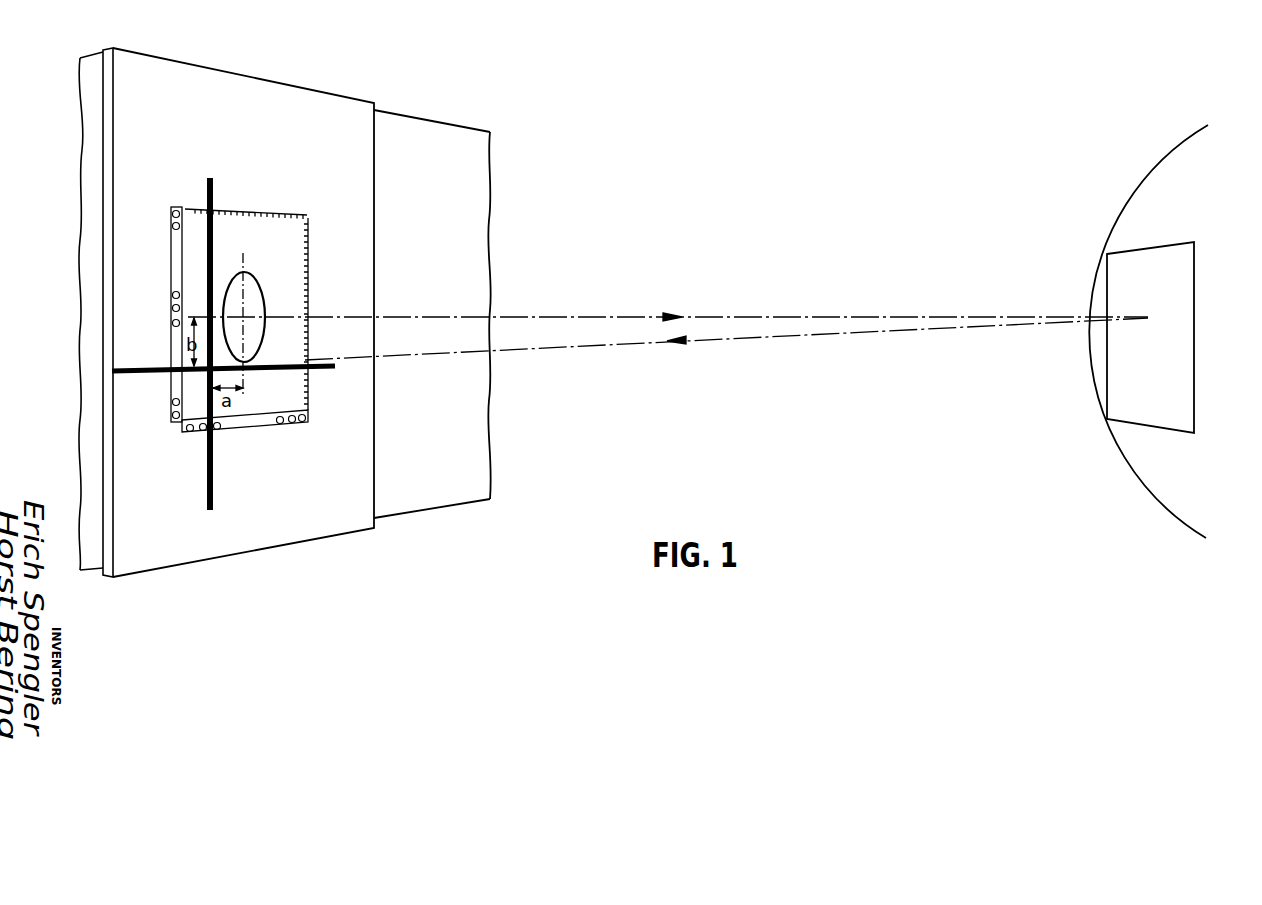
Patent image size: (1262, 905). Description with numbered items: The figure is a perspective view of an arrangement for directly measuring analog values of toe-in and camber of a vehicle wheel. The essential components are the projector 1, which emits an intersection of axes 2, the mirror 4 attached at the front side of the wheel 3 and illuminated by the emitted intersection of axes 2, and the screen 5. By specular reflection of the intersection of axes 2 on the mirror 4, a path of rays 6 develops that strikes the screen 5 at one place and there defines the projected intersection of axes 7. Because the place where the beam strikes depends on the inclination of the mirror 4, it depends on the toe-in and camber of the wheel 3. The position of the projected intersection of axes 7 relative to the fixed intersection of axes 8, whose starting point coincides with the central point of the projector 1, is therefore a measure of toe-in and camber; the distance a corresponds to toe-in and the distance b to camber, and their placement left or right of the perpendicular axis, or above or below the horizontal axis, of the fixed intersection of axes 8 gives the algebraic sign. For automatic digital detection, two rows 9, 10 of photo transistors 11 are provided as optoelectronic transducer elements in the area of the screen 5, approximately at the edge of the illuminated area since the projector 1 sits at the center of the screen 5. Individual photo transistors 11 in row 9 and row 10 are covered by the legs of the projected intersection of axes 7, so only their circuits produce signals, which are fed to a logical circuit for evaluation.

The projector 1 is at (252, 293).
The emitted intersection of axes 2 is at (575, 316).
The wheel 3 is at (1150, 188).
The mirror 4 is at (1135, 392).
The screen 5 is at (340, 117).
The path of rays 6 is at (621, 346).
The projected intersection of axes 7 is at (210, 478).
The fixed intersection of axes 8 is at (277, 318).
The row of photo transistors 9 is at (171, 247).
The row of photo transistors 10 is at (250, 430).
The photo transistors 11 is at (171, 224).